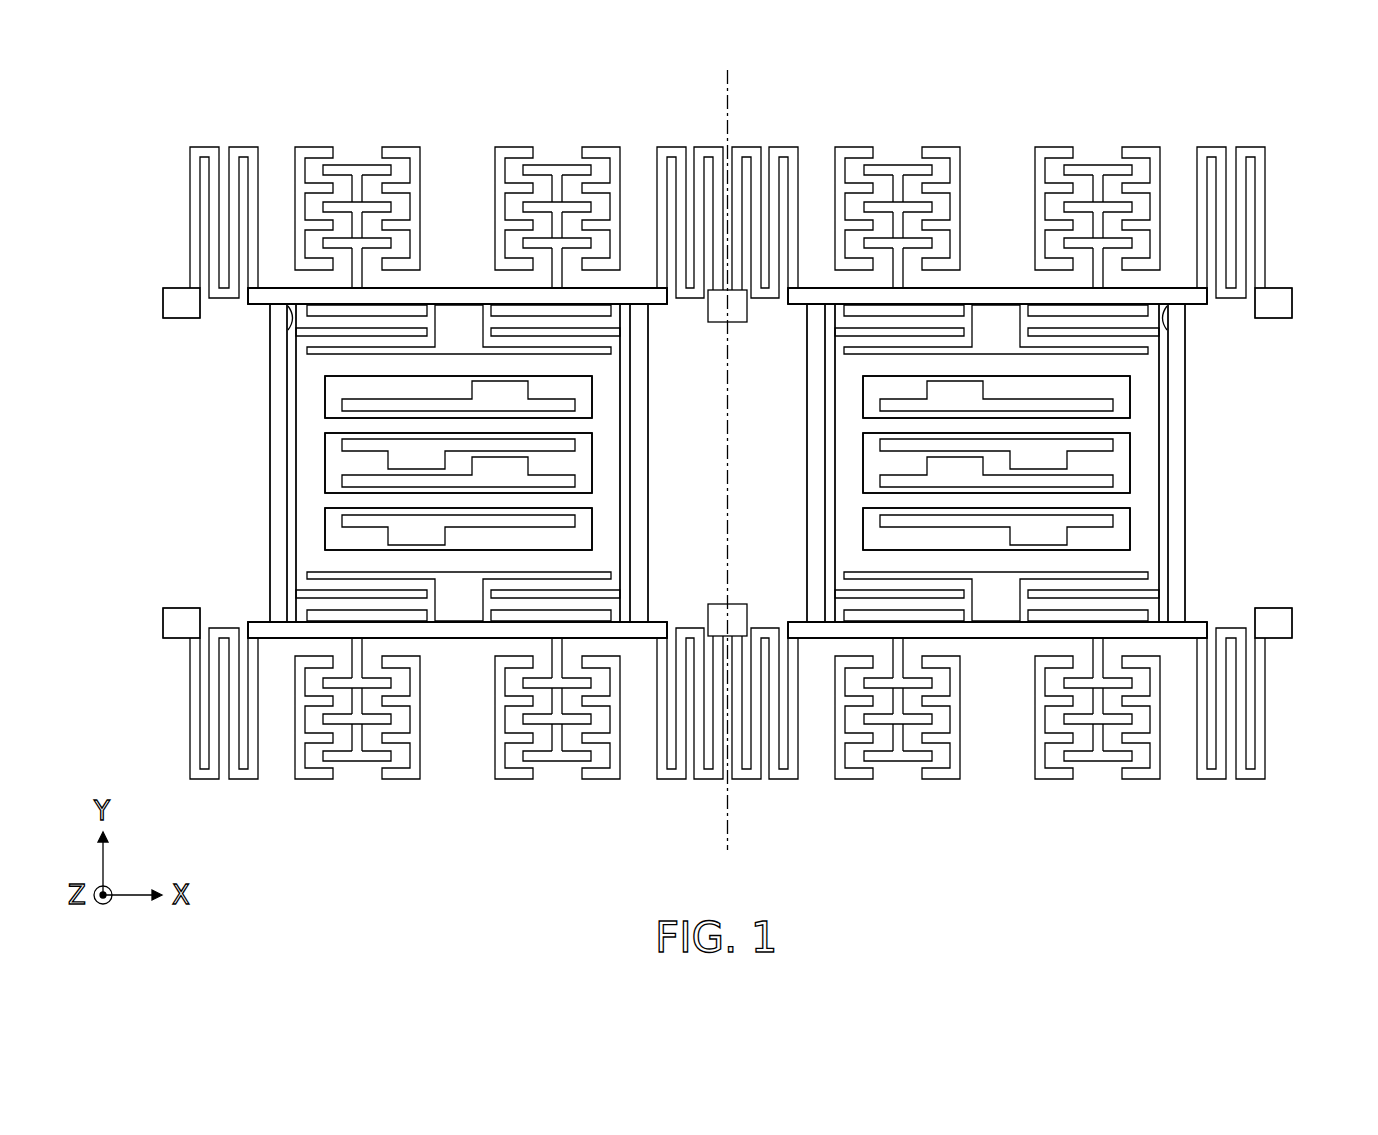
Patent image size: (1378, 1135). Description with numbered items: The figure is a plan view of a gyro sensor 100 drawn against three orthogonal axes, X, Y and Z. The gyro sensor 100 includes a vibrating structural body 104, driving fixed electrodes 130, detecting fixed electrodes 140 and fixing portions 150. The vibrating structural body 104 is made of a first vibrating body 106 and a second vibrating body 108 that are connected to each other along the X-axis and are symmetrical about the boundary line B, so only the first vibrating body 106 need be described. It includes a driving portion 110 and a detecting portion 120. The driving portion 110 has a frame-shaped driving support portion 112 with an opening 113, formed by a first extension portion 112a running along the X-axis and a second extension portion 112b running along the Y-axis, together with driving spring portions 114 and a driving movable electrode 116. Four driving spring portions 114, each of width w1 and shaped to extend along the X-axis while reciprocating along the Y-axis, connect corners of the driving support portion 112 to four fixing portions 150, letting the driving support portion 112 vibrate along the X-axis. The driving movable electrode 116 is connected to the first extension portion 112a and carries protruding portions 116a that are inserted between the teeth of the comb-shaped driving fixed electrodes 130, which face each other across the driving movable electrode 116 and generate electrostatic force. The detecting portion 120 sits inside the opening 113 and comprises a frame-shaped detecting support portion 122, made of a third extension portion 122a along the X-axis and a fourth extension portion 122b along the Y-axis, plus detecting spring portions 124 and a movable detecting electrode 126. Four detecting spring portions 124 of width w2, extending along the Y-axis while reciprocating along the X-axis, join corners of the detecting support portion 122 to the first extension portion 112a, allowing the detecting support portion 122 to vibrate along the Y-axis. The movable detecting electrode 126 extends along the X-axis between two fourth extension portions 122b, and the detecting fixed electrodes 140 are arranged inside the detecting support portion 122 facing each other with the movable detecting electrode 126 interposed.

The gyro sensor 100 is at (1266, 112).
The vibrating structural body 104 is at (1265, 860).
The first vibrating body 106 is at (722, 810).
The second vibrating body 108 is at (1265, 810).
The driving portion 110 is at (122, 570).
The driving support portion 112 is at (280, 589).
The first extension portion 112a is at (477, 298).
The second extension portion 112b is at (278, 536).
The opening 113 is at (289, 312).
The driving spring portion 114 is at (216, 165).
The driving movable electrode 116 is at (357, 178).
The protruding portions 116a is at (384, 170).
The detecting portion 120 is at (196, 343).
The detecting support portion 122 is at (312, 386).
The third extension portion 122a is at (430, 363).
The fourth extension portion 122b is at (318, 470).
The detecting spring portion 124 is at (340, 342).
The movable detecting electrode 126 is at (348, 424).
The driving fixed electrode 130 is at (300, 150).
The detecting fixed electrode 140 is at (578, 404).
The fixing portion 150 is at (178, 303).